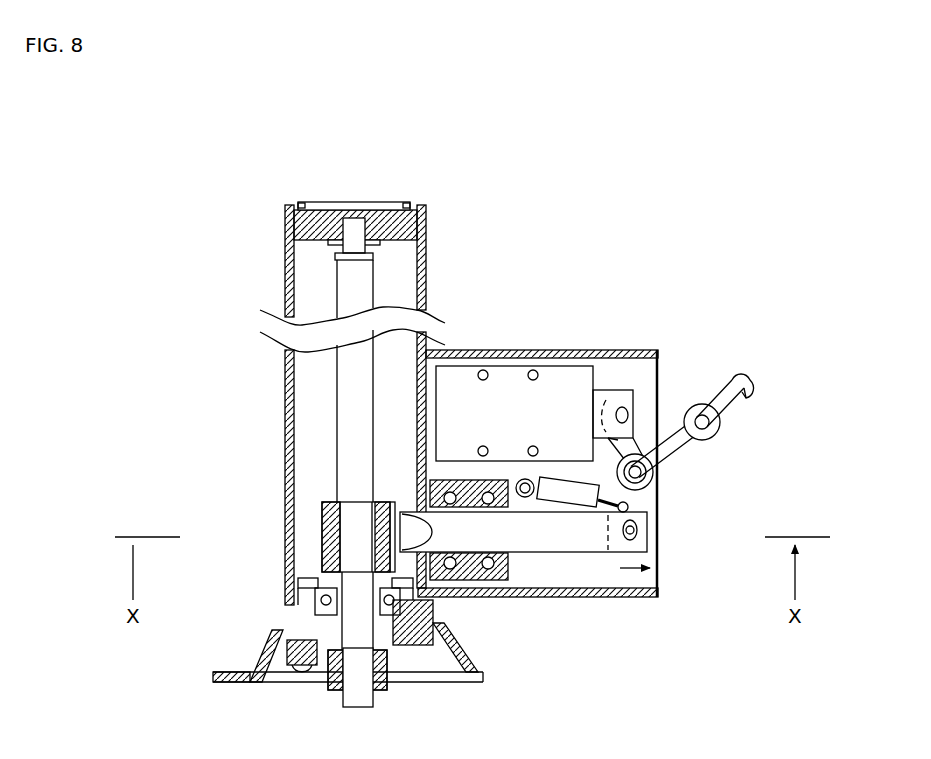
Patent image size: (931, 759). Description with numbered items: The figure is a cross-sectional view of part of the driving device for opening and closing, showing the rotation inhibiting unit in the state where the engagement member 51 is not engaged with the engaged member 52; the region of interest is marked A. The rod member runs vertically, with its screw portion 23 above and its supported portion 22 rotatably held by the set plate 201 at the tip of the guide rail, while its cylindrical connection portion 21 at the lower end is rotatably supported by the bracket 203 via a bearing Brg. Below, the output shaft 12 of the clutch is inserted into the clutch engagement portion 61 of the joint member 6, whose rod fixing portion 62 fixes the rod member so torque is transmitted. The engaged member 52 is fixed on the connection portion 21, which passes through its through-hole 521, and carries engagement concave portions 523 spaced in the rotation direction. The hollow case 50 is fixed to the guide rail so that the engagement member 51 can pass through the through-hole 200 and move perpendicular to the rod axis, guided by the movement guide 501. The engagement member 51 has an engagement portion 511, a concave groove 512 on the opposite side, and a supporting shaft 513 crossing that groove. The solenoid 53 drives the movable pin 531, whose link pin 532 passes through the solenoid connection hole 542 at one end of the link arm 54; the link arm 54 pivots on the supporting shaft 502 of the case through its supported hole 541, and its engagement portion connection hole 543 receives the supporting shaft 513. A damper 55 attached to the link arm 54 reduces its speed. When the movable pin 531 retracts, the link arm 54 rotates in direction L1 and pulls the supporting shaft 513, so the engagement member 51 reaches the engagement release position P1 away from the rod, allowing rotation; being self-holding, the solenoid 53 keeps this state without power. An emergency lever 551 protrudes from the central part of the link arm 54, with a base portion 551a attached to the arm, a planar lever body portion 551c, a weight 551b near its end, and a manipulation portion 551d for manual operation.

The through-hole 200 is at (417, 505).
The set plate 201 is at (398, 224).
The screw portion 23 is at (350, 228).
The supported portion 22 is at (362, 282).
The case 50 is at (650, 352).
The solenoid 53 is at (515, 375).
The movable pin 531 is at (610, 388).
The solenoid connection hole 542 is at (628, 414).
The link pin 532 is at (636, 400).
The rotation direction L1 is at (625, 383).
The link arm 54 is at (653, 468).
The emergency lever 551 is at (732, 400).
The base portion 551a is at (675, 443).
The weight 551b is at (714, 428).
The lever body portion 551c is at (744, 383).
The manipulation portion 551d is at (746, 399).
The engagement member 51 is at (548, 552).
The engagement release position P1 is at (437, 555).
The movement guide 501 is at (470, 583).
The damper 55 is at (580, 502).
The concave groove 512 is at (608, 560).
The supported hole 541 is at (642, 476).
The supporting shaft 502 is at (646, 488).
The engagement portion connection hole 543 is at (640, 530).
The supporting shaft 513 is at (650, 548).
The engaged member 52 is at (323, 555).
The through-hole 521 is at (322, 537).
The engagement portion 511 is at (395, 503).
The engagement concave portions 523 is at (390, 527).
The bearing Brg is at (318, 598).
The connection portion 21 is at (300, 612).
The joint member 6 is at (327, 645).
The rod fixing portion 62 is at (290, 640).
The clutch engagement portion 61 is at (300, 665).
The output shaft 12 is at (355, 690).
The bracket 203 is at (483, 678).
The assembly A is at (578, 245).